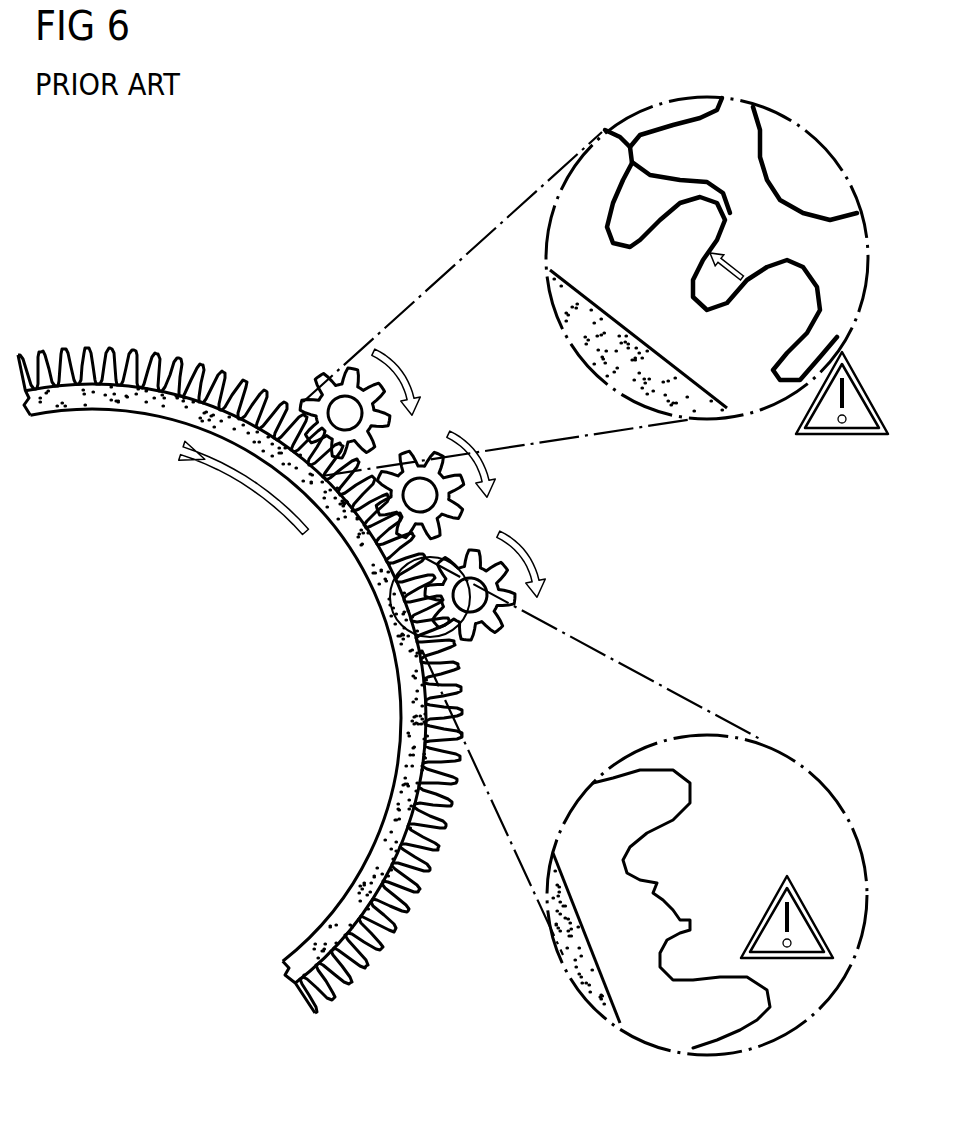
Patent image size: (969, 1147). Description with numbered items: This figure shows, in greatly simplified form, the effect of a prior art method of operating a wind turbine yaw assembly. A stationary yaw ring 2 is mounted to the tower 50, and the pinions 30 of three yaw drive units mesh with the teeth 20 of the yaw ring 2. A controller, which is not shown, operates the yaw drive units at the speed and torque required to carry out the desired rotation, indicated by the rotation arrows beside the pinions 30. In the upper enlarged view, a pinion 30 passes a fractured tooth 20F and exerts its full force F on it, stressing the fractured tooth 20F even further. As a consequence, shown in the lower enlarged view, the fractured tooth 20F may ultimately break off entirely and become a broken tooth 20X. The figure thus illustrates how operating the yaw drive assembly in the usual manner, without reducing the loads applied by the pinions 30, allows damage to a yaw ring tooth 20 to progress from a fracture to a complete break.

The yaw ring 2 is at (192, 335).
The yaw ring tooth 20 is at (123, 353).
The tower 50 is at (157, 403).
The pinion 30 is at (380, 428).
The fractured tooth 20F is at (713, 252).
The full force F is at (738, 266).
The broken tooth 20X is at (660, 893).